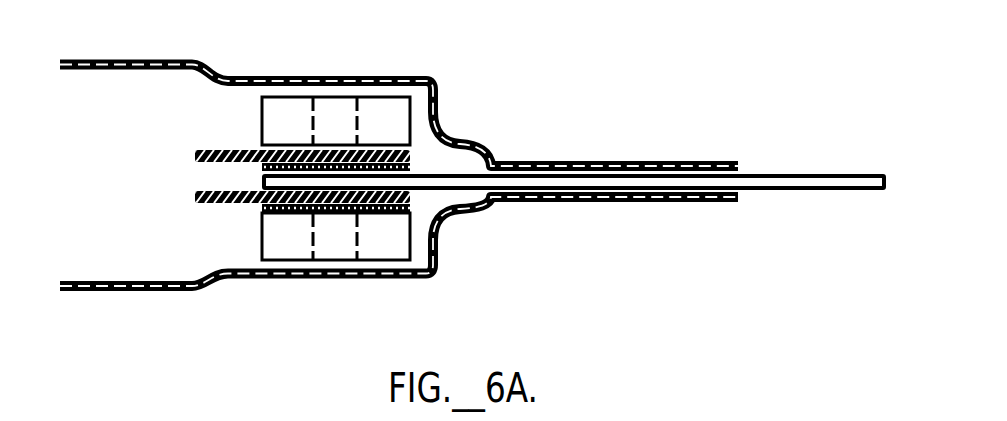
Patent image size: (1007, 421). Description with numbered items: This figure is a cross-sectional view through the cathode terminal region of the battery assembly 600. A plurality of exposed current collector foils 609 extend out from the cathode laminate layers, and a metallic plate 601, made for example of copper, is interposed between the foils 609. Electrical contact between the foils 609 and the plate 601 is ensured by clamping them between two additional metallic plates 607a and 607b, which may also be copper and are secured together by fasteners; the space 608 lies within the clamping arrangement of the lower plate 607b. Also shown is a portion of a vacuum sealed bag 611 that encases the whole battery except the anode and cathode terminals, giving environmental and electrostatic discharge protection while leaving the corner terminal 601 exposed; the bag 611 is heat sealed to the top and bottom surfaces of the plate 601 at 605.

The light source / laser assembly 600 is at (452, 181).
The metallic plate 601 is at (800, 174).
The heat seal 605 is at (673, 162).
The additional metallic plate 607a is at (372, 115).
The additional metallic plate 607b is at (382, 247).
The slot / gap 608 is at (345, 249).
The exposed current collector foils 609 is at (195, 198).
The vacuum sealed bag 611 is at (153, 60).